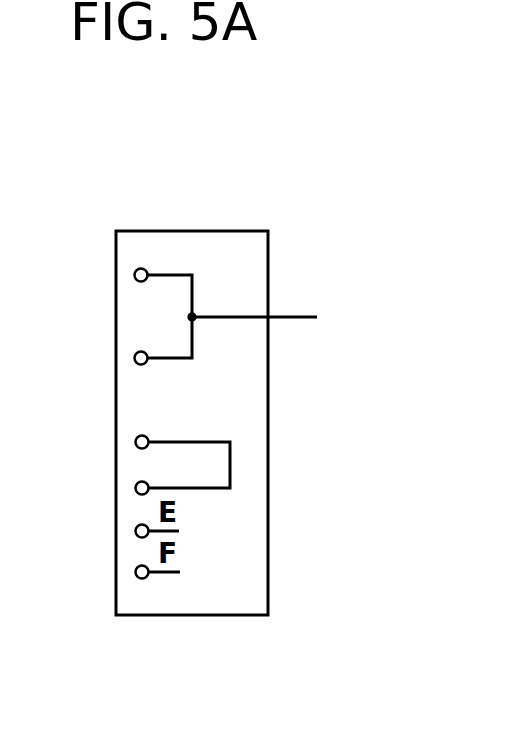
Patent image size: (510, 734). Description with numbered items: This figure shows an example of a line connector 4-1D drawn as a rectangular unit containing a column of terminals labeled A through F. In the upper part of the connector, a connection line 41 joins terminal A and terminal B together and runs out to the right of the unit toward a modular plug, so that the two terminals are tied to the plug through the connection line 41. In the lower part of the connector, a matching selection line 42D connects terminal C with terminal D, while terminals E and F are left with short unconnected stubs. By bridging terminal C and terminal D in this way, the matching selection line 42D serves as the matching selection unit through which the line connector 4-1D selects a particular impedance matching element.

The line connector 4-1D is at (145, 230).
The connection line 41 is at (197, 288).
The matching selection line 42D is at (230, 465).